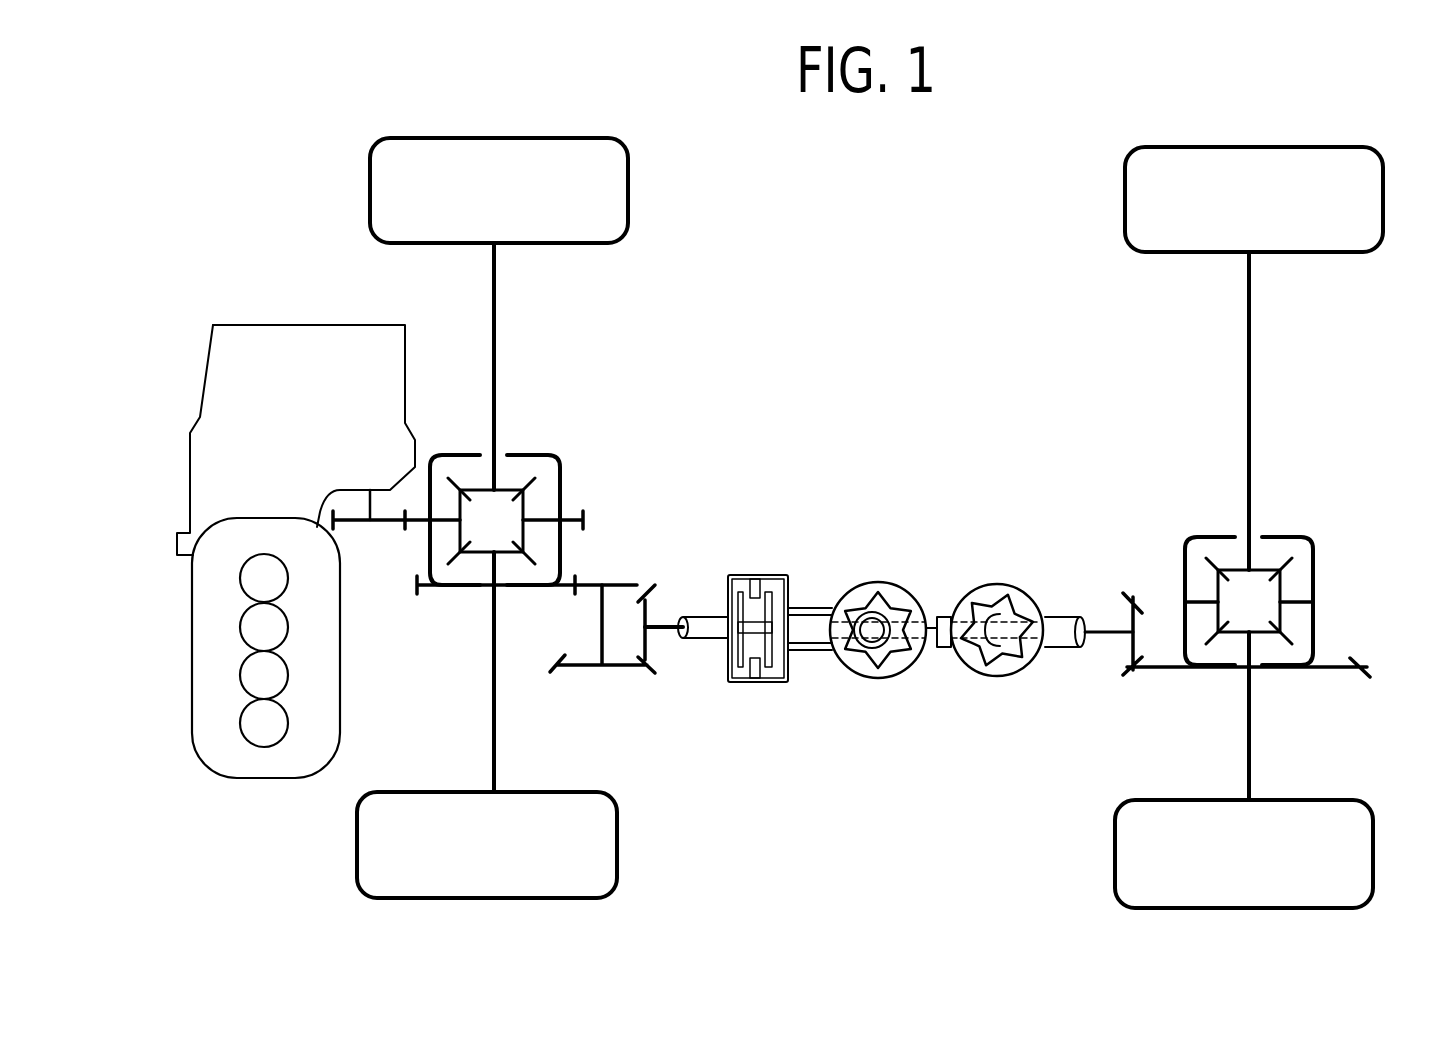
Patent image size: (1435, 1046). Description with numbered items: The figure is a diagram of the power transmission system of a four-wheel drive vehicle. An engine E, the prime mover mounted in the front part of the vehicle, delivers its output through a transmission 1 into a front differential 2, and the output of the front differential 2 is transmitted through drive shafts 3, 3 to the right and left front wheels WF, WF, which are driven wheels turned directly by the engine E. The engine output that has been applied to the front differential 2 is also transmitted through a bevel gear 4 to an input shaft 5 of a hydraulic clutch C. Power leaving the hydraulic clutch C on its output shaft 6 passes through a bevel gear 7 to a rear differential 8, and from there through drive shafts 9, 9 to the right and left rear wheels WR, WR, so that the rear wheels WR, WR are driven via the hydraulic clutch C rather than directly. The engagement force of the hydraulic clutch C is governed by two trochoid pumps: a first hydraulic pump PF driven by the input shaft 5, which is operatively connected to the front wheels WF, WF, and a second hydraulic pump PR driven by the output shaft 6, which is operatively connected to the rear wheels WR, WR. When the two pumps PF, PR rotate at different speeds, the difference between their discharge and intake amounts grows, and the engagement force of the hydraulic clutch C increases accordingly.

The transmission 1 is at (256, 325).
The engine E is at (184, 730).
The front differential 2 is at (560, 476).
The drive shafts 3 is at (496, 377).
The front wheels WF is at (615, 213).
The rear wheels WR is at (1133, 213).
The bevel gear 4 is at (598, 676).
The input shaft 5 is at (713, 632).
The hydraulic clutch C is at (769, 575).
The first hydraulic pump PF is at (881, 578).
The second hydraulic pump PR is at (994, 688).
The output shaft 6 is at (1060, 618).
The bevel gear 7 is at (1176, 678).
The rear differential 8 is at (1203, 537).
The drive shafts 9 is at (1248, 372).